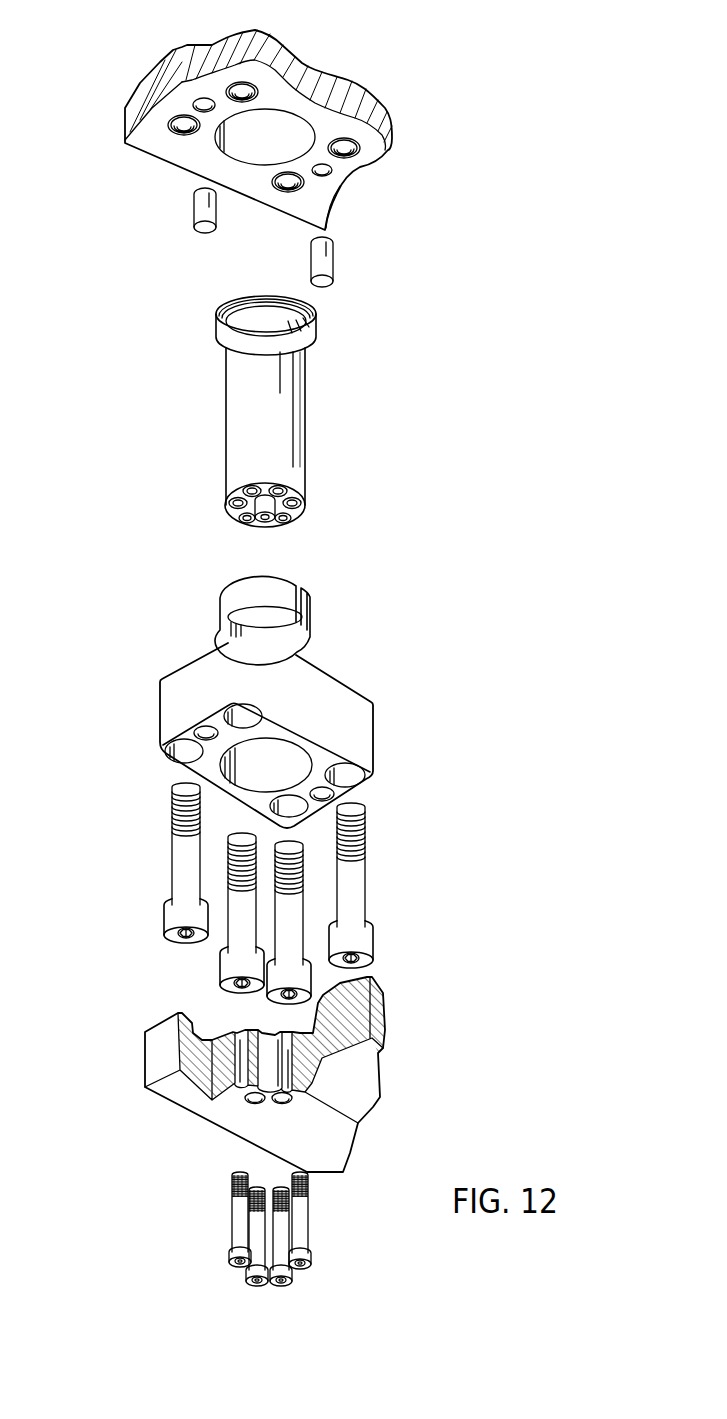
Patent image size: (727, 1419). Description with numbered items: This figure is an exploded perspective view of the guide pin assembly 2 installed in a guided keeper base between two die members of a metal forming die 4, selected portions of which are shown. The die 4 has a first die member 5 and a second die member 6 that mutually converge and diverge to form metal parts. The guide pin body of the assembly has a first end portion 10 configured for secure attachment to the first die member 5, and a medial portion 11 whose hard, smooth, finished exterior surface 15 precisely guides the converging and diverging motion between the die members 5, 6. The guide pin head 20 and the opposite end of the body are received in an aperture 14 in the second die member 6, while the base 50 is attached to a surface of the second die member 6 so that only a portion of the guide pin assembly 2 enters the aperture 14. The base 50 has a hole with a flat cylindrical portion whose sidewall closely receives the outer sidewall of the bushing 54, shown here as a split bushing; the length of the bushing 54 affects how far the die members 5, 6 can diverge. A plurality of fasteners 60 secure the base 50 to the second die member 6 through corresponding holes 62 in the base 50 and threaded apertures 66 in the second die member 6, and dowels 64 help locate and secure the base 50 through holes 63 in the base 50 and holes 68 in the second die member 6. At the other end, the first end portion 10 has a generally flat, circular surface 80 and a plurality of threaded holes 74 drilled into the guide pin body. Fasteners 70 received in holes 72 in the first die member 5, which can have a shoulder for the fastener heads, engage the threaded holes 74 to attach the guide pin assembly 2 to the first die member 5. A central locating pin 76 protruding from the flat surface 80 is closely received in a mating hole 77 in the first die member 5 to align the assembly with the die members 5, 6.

The guide pin assembly 2 is at (276, 426).
The die 4 is at (254, 120).
The first die member 5 is at (290, 1074).
The second die member 6 is at (179, 46).
The first end portion 10 is at (299, 500).
The medial portion 11 is at (226, 400).
The aperture 14 is at (235, 150).
The exterior surface 15 is at (306, 435).
The guide pin head 20 is at (320, 325).
The base 50 is at (280, 702).
The bushing 54 is at (313, 604).
The fasteners 60 is at (170, 860).
The holes 62 is at (177, 761).
The holes 63 is at (335, 794).
The dowels 64 is at (196, 212).
The threaded apertures 66 is at (168, 127).
The holes 68 is at (329, 173).
The fasteners 70 is at (304, 1223).
The holes 72 is at (300, 1065).
The threaded holes 74 is at (237, 513).
The locating pin 76 is at (272, 525).
The hole 77 is at (294, 1094).
The flat surface 80 is at (291, 492).